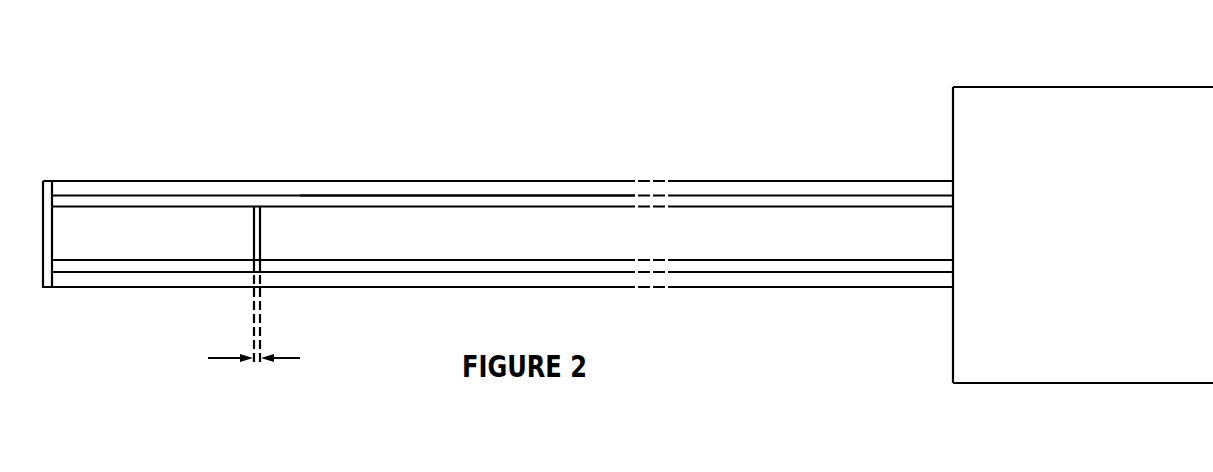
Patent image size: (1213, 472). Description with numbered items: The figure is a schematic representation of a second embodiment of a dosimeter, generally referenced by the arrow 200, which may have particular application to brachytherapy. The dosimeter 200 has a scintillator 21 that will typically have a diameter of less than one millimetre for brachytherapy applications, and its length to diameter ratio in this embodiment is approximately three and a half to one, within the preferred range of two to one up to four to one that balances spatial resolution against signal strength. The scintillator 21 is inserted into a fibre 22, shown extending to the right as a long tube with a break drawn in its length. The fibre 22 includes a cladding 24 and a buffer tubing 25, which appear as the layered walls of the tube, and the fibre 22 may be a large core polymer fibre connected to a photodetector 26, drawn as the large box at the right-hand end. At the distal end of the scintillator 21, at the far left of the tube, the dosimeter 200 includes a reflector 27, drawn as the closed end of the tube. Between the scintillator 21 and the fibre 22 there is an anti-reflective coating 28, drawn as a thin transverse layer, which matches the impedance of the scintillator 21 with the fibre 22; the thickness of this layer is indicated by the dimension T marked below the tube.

The dosimeter 200 is at (392, 128).
The scintillator 21 is at (131, 247).
The fibre 22 is at (543, 197).
The cladding 24 is at (463, 205).
The buffer tubing 25 is at (572, 279).
The photodetector 26 is at (1096, 247).
The reflector 27 is at (50, 181).
The anti-reflective coating 28 is at (258, 227).
The wall thickness T is at (264, 344).